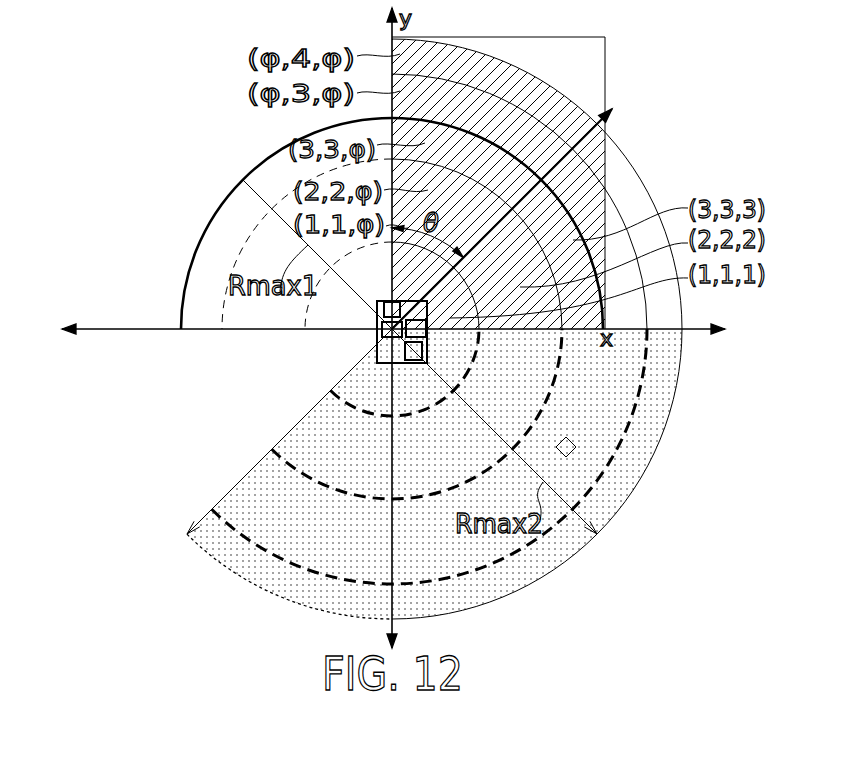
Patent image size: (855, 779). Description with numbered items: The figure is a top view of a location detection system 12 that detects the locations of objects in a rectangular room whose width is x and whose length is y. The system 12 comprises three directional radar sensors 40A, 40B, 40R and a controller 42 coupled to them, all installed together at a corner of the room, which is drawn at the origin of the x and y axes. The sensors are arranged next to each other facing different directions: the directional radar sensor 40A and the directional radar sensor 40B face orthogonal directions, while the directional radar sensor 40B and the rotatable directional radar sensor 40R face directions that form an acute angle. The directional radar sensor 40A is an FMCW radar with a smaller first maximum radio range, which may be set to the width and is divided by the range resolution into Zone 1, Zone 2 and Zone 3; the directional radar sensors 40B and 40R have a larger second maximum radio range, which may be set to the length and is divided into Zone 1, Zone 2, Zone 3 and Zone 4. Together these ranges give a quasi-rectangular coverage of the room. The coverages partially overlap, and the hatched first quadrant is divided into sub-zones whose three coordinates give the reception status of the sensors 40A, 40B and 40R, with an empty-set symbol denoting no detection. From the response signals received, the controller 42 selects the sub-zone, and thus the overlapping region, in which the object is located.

The location detection system 12 is at (427, 362).
The directional radar sensor 40A is at (384, 312).
The directional radar sensor 40B is at (427, 331).
The directional radar sensor 40R is at (414, 360).
The controller 42 is at (382, 334).
The Zone 1 is at (435, 285).
The Zone 2 is at (477, 244).
The Zone 3 is at (392, 223).
The Zone 4 is at (519, 201).